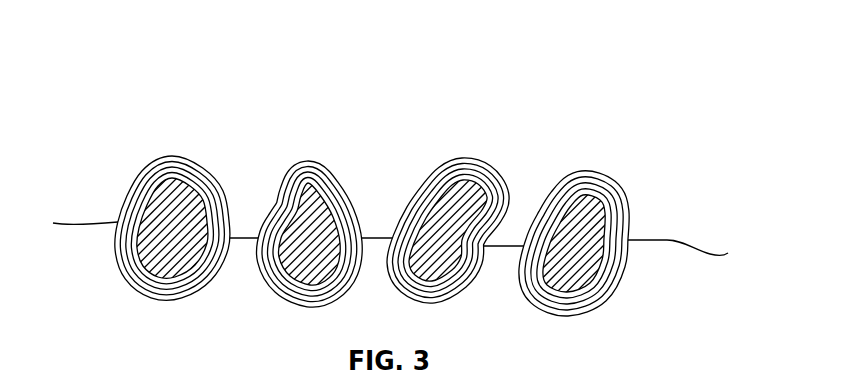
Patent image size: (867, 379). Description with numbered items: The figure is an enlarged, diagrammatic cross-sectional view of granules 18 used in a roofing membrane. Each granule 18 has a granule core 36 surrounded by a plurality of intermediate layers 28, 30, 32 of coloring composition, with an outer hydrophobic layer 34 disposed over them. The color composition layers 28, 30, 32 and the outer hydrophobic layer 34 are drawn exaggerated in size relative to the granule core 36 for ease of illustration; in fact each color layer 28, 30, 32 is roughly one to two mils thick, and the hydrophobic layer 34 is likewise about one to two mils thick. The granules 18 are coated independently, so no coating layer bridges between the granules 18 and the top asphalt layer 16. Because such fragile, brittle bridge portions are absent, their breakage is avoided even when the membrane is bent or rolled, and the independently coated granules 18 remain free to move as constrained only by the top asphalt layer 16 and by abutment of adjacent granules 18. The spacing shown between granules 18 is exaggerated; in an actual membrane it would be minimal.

The top asphalt layer 16 is at (83, 225).
The granules 18 is at (160, 142).
The intermediate layer of coloring composition 28 is at (612, 178).
The intermediate layer of coloring composition 30 is at (615, 228).
The intermediate layer of coloring composition 32 is at (618, 262).
The outer hydrophobic layer 34 is at (617, 287).
The granule core 36 is at (572, 217).